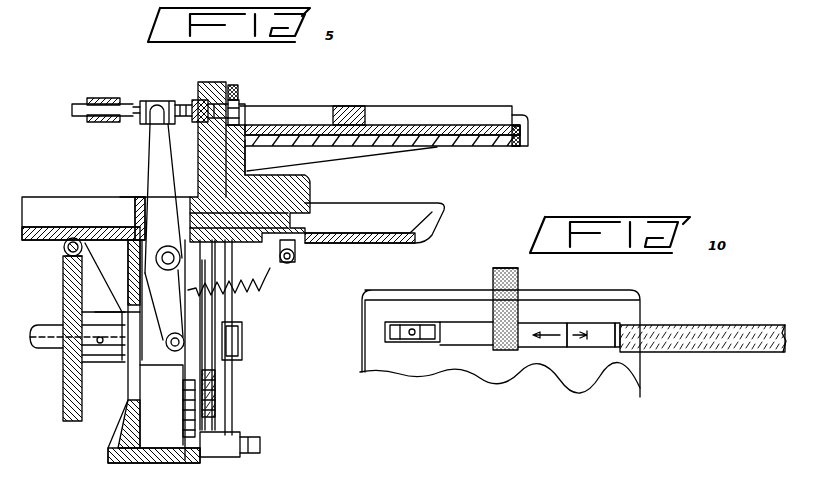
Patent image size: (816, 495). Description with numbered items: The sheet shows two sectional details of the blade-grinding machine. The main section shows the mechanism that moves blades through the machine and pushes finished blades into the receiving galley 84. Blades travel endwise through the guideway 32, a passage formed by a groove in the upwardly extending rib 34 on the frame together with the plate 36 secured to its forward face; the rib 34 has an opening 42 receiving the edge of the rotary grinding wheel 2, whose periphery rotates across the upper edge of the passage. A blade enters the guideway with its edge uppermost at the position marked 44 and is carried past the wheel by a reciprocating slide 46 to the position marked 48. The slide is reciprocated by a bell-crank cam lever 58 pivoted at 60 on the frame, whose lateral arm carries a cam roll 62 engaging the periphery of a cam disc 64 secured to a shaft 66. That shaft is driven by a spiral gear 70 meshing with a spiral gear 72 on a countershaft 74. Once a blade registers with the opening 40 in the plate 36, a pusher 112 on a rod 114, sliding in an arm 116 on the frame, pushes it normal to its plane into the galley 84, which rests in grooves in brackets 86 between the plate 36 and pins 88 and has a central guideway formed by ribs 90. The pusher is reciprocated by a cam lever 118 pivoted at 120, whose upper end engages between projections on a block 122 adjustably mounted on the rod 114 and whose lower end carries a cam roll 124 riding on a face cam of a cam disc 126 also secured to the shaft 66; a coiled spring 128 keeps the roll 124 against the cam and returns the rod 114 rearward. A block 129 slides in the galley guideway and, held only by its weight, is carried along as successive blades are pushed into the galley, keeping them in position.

In FIG. 10, the rotary grinding wheel 2 is at (518, 270).
In FIG. 5, the guideway 32 is at (214, 81).
In FIG. 10, the guideway 32 is at (553, 325).
In FIG. 5, the rib 34 is at (196, 99).
In FIG. 10, the rib 34 is at (622, 295).
In FIG. 5, the plate 36 is at (238, 90).
In FIG. 5, the opening 40 is at (233, 104).
In FIG. 10, the opening 40 is at (418, 322).
In FIG. 10, the opening 42 is at (493, 300).
In FIG. 10, the blade position 44 is at (603, 327).
In FIG. 10, the reciprocating slide 46 is at (736, 326).
In FIG. 10, the blade position 48 is at (467, 343).
In FIG. 5, the bell-crank cam lever 58 is at (233, 378).
In FIG. 5, the pivot 60 is at (254, 447).
In FIG. 5, the cam roll 62 is at (213, 400).
In FIG. 5, the cam disc 64 is at (212, 326).
In FIG. 5, the shaft 66 is at (50, 352).
In FIG. 5, the spiral gear 70 is at (62, 418).
In FIG. 5, the spiral gear 72 is at (62, 250).
In FIG. 5, the countershaft 74 is at (64, 262).
In FIG. 5, the galley 84 is at (470, 124).
In FIG. 5, the brackets 86 is at (437, 148).
In FIG. 5, the pins 88 is at (528, 124).
In FIG. 5, the ribs 90 is at (417, 105).
In FIG. 5, the pusher 112 is at (235, 108).
In FIG. 5, the rod 114 is at (77, 103).
In FIG. 5, the arm 116 is at (118, 97).
In FIG. 5, the cam lever 118 is at (152, 156).
In FIG. 5, the pivot 120 is at (176, 255).
In FIG. 5, the block 122 is at (154, 100).
In FIG. 5, the cam roll 124 is at (140, 360).
In FIG. 5, the cam disc 126 is at (185, 407).
In FIG. 5, the coiled spring 128 is at (282, 265).
In FIG. 5, the block 129 is at (349, 105).